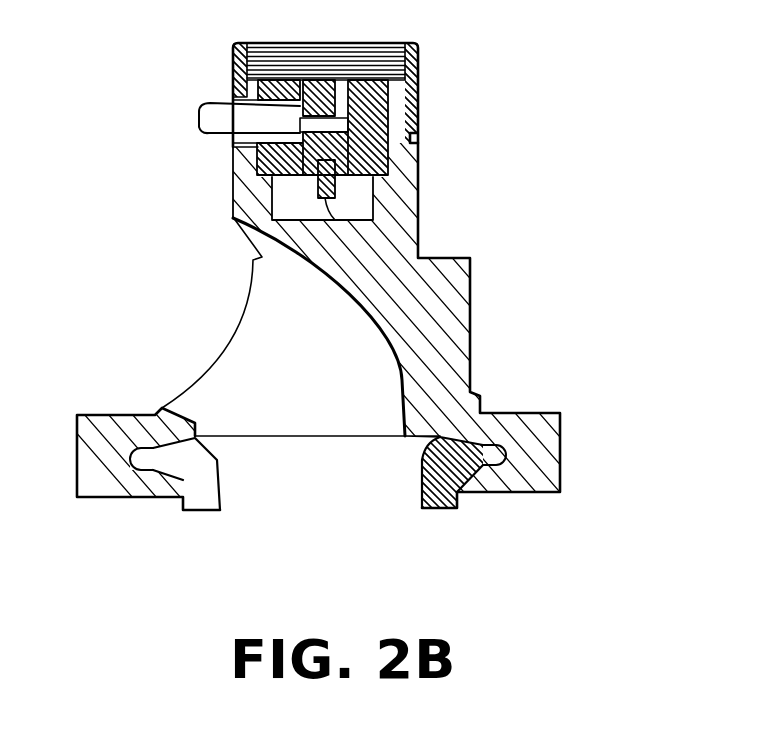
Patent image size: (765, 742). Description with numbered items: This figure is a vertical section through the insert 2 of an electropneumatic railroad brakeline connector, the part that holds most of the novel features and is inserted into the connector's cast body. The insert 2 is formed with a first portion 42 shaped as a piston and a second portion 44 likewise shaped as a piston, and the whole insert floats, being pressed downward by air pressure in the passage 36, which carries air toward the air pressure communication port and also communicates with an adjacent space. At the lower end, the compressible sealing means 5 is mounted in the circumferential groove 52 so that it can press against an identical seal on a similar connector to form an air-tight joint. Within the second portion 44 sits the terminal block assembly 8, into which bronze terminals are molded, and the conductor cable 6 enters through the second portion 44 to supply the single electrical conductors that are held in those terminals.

The insert 2 is at (472, 315).
The sealing means 5 is at (260, 510).
The conductor cable 6 is at (215, 135).
The terminal block assembly 8 is at (392, 128).
The flowpath 36 is at (250, 365).
The first portion of insert 42 is at (560, 457).
The second portion of insert 44 is at (420, 83).
The circumferential groove 52 is at (497, 460).